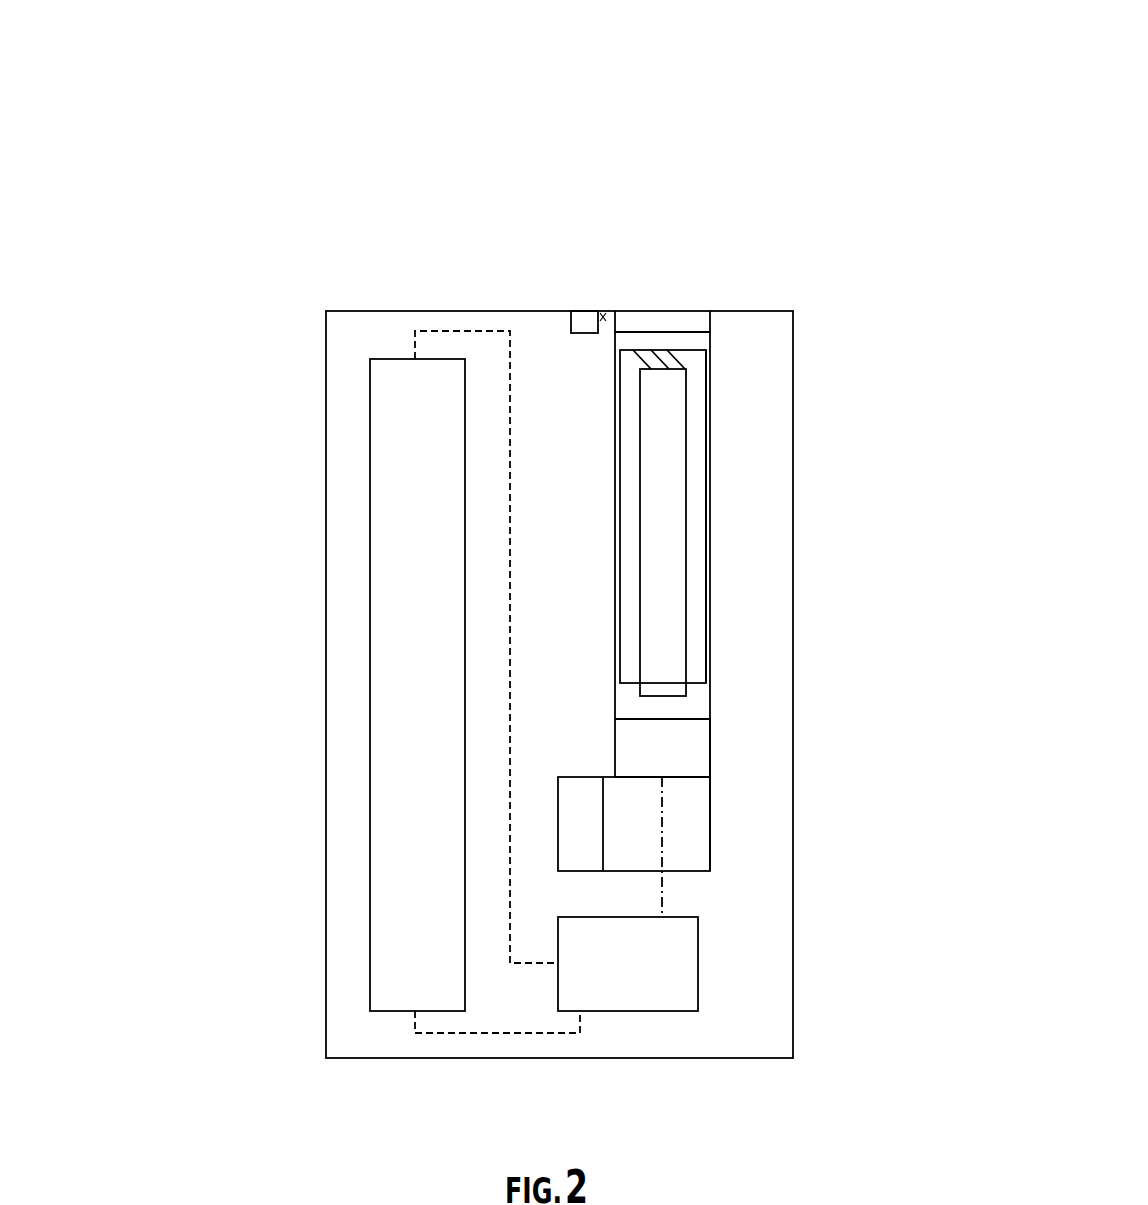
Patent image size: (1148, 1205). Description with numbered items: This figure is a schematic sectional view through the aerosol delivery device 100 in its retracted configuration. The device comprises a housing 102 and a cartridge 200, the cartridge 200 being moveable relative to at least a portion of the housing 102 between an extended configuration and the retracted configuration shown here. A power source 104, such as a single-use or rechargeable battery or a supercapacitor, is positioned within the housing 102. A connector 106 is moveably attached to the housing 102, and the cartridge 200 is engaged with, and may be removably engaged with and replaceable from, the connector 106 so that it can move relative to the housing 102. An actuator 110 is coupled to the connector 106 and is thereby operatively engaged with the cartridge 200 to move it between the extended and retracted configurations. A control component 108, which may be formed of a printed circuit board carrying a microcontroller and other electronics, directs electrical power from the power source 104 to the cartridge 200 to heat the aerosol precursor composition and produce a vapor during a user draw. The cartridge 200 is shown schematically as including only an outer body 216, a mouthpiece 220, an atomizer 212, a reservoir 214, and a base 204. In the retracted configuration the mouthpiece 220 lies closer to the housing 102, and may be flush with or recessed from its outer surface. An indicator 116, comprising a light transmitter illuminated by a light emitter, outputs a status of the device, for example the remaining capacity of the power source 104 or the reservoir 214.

The aerosol delivery device 100 is at (230, 130).
The housing 102 is at (324, 920).
The power source 104 is at (370, 765).
The connector 106 is at (710, 841).
The control component 108 is at (654, 1013).
The actuator 110 is at (558, 777).
The indicator 116 is at (588, 311).
The cartridge 200 is at (724, 438).
The base 204 is at (710, 757).
The atomizer 212 is at (687, 347).
The reservoir 214 is at (688, 612).
The outer body 216 is at (710, 518).
The mouthpiece 220 is at (662, 311).